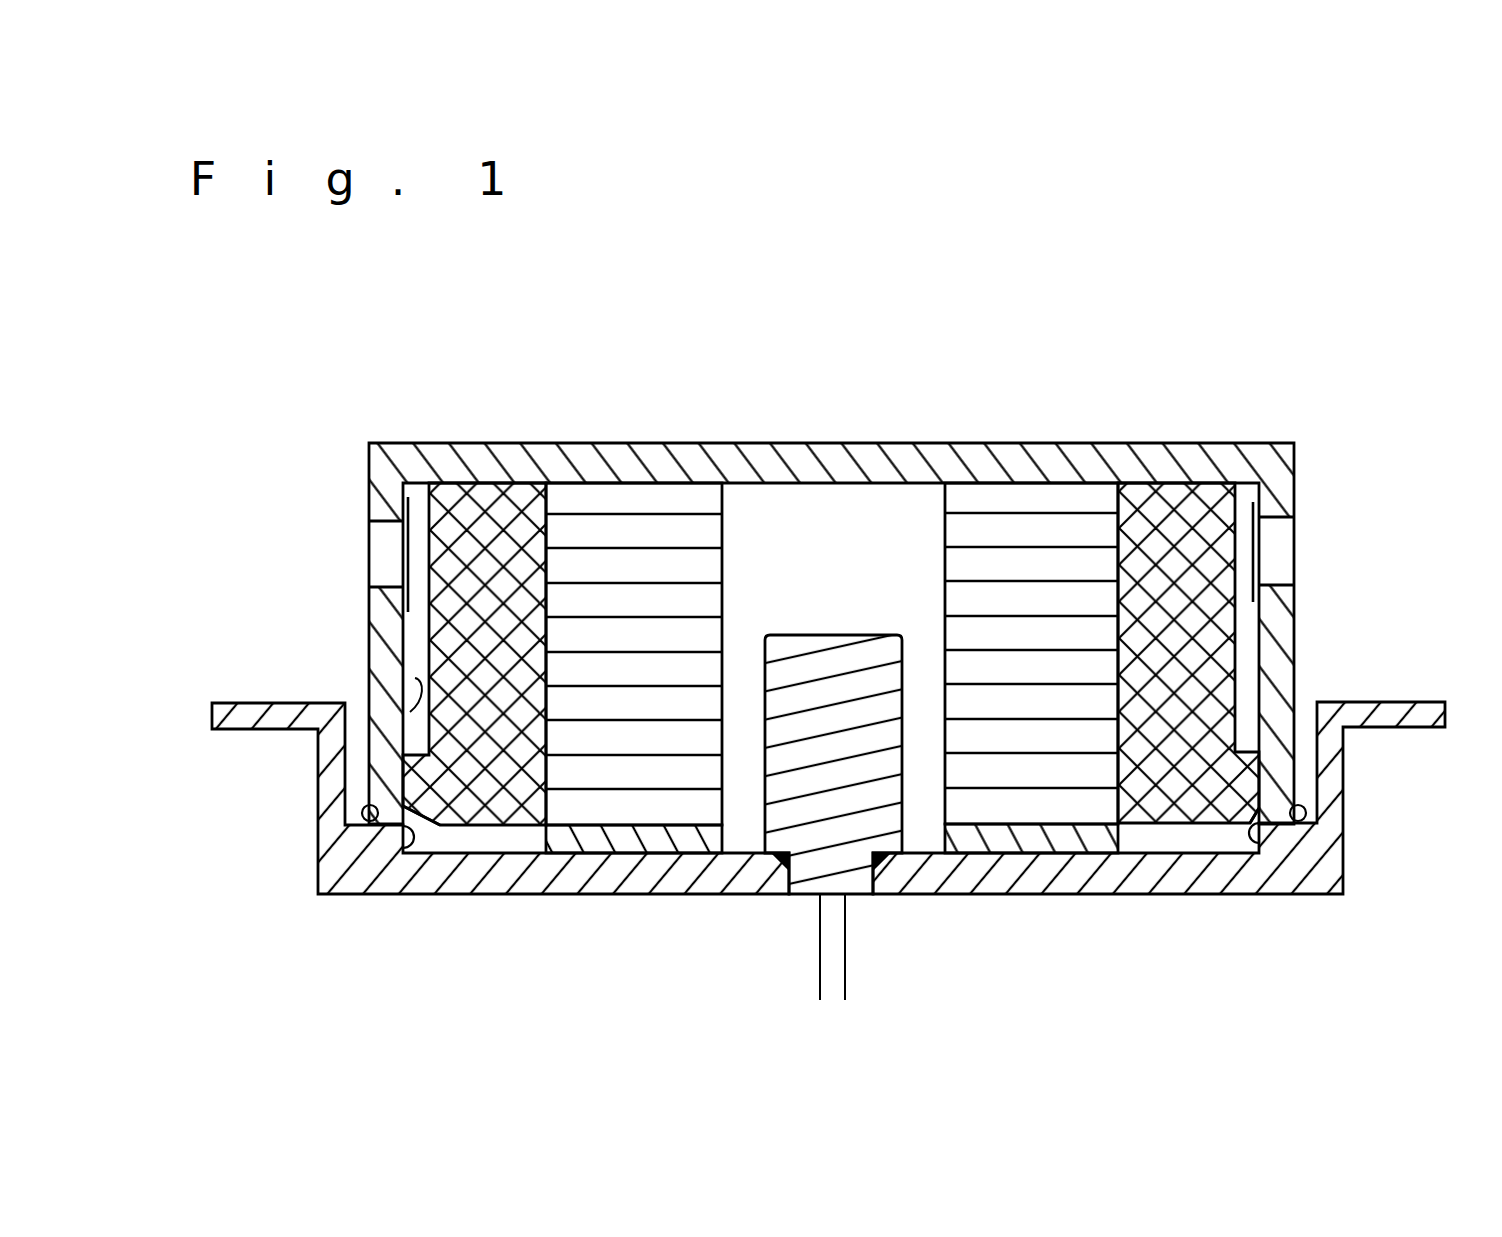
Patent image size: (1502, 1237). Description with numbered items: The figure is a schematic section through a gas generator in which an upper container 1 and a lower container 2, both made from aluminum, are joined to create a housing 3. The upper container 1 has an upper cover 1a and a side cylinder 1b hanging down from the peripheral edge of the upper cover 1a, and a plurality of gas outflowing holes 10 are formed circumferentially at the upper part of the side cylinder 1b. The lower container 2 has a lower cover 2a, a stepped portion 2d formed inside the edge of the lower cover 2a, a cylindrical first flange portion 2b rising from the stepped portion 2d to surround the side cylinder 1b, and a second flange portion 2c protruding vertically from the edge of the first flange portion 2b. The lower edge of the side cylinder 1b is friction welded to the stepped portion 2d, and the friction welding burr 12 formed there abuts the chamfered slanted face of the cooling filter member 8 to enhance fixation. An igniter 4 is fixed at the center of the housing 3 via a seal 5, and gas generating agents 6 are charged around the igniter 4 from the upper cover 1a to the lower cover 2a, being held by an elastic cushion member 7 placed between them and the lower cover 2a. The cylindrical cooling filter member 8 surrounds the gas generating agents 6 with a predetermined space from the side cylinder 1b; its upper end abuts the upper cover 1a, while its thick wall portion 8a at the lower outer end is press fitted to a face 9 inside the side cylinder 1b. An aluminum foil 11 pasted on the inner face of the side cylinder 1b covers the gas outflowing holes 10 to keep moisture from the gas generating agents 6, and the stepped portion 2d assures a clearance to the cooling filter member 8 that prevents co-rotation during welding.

The upper container 1 is at (826, 552).
The upper cover 1a is at (1010, 463).
The side cylinder 1b is at (1283, 642).
The lower container 2 is at (846, 843).
The lower cover 2a is at (1058, 882).
The first flange portion 2b is at (1333, 790).
The second flange portion 2c is at (1407, 707).
The stepped portion 2d is at (363, 840).
The housing 3 is at (804, 392).
The igniter 4 is at (852, 647).
The seal 5 is at (778, 863).
The gas generating agents 6 is at (630, 495).
The cushion member 7 is at (590, 835).
The cooling filter member 8 is at (505, 505).
The thick wall portion 8a is at (420, 780).
The face 9 is at (410, 712).
The gas outflowing holes 10 is at (378, 543).
The aluminum foil 11 is at (413, 517).
The friction welding burr 12 is at (415, 845).